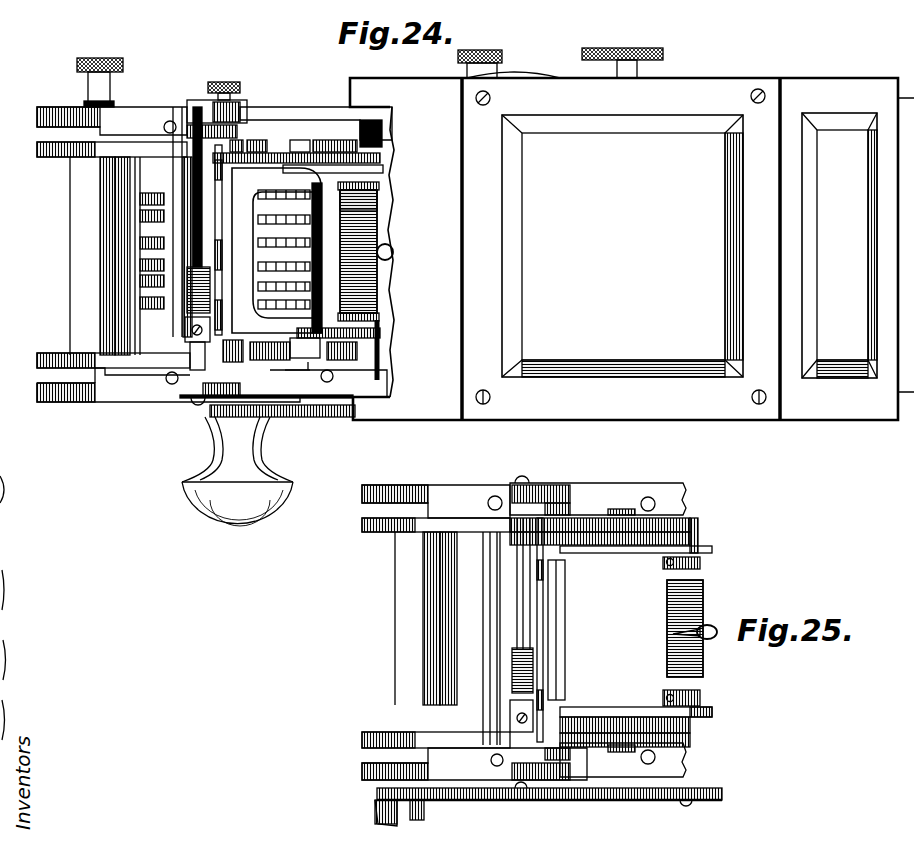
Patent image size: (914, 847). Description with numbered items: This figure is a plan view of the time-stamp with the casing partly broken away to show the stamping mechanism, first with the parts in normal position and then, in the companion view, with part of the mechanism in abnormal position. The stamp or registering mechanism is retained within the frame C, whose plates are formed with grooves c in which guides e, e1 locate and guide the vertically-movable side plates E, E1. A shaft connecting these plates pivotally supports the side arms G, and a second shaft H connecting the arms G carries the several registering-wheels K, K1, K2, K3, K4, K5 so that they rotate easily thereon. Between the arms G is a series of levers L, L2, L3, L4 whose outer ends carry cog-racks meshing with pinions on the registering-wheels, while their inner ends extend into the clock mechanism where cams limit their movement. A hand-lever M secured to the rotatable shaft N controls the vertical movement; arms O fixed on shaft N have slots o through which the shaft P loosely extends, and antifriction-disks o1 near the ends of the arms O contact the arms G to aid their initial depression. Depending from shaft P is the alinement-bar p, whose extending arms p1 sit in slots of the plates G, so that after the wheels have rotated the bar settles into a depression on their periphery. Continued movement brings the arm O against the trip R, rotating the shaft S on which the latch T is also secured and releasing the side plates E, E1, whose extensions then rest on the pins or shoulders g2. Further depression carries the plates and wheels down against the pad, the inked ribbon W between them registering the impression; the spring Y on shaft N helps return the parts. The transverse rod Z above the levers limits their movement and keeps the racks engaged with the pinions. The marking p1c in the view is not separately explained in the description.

In FIG. 24, the frame C is at (214, 246).
In FIG. 25, the frame C is at (524, 628).
In FIG. 24, the pins or shoulders g2 is at (162, 121).
In FIG. 24, the extending arms p1 is at (240, 140).
In FIG. 24, the side arms G is at (262, 140).
In FIG. 25, the side arms G is at (542, 524).
In FIG. 24, the side plate E1 is at (39, 148).
In FIG. 25, the side plate E1 is at (363, 530).
In FIG. 24, the inked ribbon W is at (84, 327).
In FIG. 25, the inked ribbon W is at (395, 630).
In FIG. 24, the registering-wheel K5 is at (140, 197).
In FIG. 24, the registering-wheel K4 is at (140, 214).
In FIG. 24, the registering-wheel K3 is at (140, 242).
In FIG. 24, the registering-wheel K2 is at (140, 264).
In FIG. 24, the registering-wheel K1 is at (140, 282).
In FIG. 24, the registering-wheel K is at (140, 305).
In FIG. 24, the shaft S is at (195, 186).
In FIG. 25, the shaft S is at (522, 590).
In FIG. 24, the second shaft H is at (203, 174).
In FIG. 24, the trip R is at (188, 347).
In FIG. 24, the alinement-bar p is at (276, 250).
In FIG. 24, the lever L4 is at (300, 223).
In FIG. 24, the lever L3 is at (310, 232).
In FIG. 24, the lever L is at (310, 258).
In FIG. 24, the lever L2 is at (305, 288).
In FIG. 24, the shaft P is at (313, 298).
In FIG. 25, the shaft P is at (563, 613).
In FIG. 24, the spring Y is at (382, 267).
In FIG. 25, the spring Y is at (702, 612).
In FIG. 24, the rotatable shaft N is at (380, 182).
In FIG. 25, the rotatable shaft N is at (678, 577).
In FIG. 24, the arms O is at (343, 170).
In FIG. 24, the antifriction-disks o1 is at (333, 138).
In FIG. 25, the antifriction-disks o1 is at (607, 549).
In FIG. 24, the guide e1 is at (296, 136).
In FIG. 24, the slots o is at (340, 320).
In FIG. 25, the slots o is at (588, 556).
In FIG. 24, the transverse rod Z is at (383, 338).
In FIG. 24, the groove c is at (285, 370).
In FIG. 24, the guide e is at (303, 377).
In FIG. 24, the latch T is at (173, 388).
In FIG. 25, the latch T is at (518, 752).
In FIG. 24, the side plate E is at (40, 358).
In FIG. 25, the side plate E is at (366, 734).
In FIG. 24, the hand-lever M is at (268, 465).
In FIG. 25, the hand-lever M is at (414, 813).
In FIG. 25, the screw and pin p1c is at (565, 514).